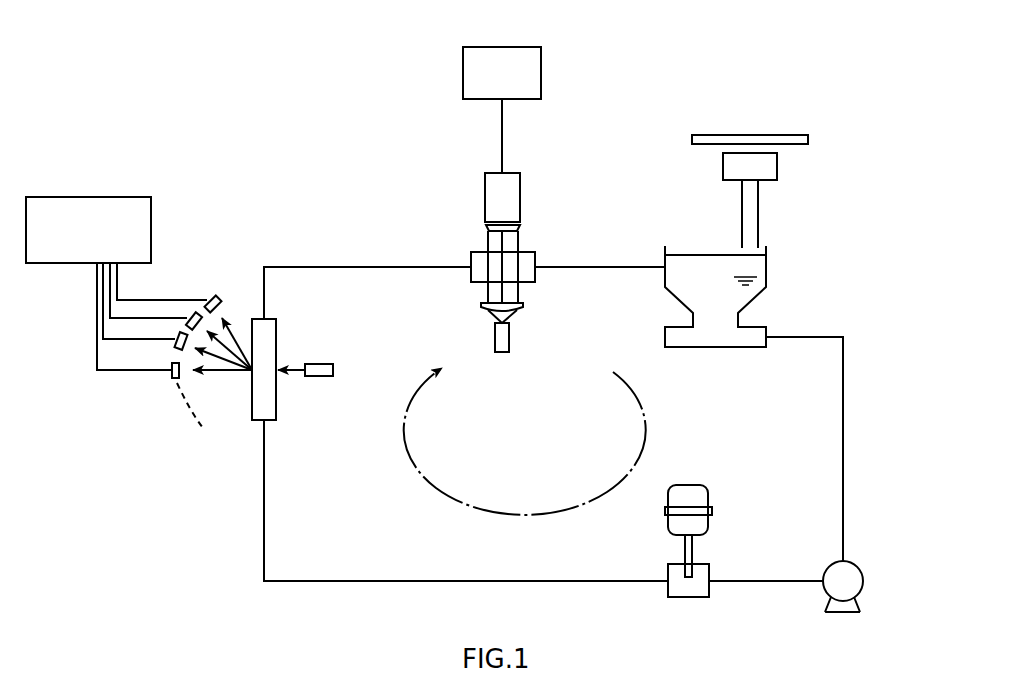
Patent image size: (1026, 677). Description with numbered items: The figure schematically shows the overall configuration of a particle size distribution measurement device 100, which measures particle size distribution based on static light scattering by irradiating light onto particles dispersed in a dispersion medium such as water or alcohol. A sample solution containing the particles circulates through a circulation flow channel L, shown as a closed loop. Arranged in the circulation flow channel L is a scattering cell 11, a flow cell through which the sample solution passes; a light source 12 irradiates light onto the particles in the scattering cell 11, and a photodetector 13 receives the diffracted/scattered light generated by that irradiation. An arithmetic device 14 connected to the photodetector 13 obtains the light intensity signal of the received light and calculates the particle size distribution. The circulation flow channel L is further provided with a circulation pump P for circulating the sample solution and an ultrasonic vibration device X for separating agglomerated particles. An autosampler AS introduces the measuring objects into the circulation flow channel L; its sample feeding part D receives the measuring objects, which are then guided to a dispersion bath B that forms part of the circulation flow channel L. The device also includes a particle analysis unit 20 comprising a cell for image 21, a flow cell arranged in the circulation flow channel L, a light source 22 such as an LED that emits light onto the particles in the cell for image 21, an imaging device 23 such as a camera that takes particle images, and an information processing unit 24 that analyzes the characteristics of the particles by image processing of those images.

The particle size distribution measurement device 100 is at (165, 88).
The arithmetic device 14 is at (43, 263).
The photodetector 13 is at (222, 297).
The scattering cell 11 is at (252, 407).
The light source 12 is at (318, 376).
The circulation flow channel L is at (302, 265).
The particle analysis unit 20 is at (609, 106).
The information processing unit 24 is at (541, 73).
The imaging device 23 is at (520, 197).
The cell for image 21 is at (535, 258).
The light source 22 is at (509, 338).
The autosampler AS is at (827, 150).
The sample feeding part D is at (723, 167).
The dispersion bath B is at (766, 267).
The ultrasonic vibration device X is at (708, 500).
The circulation pump P is at (863, 579).